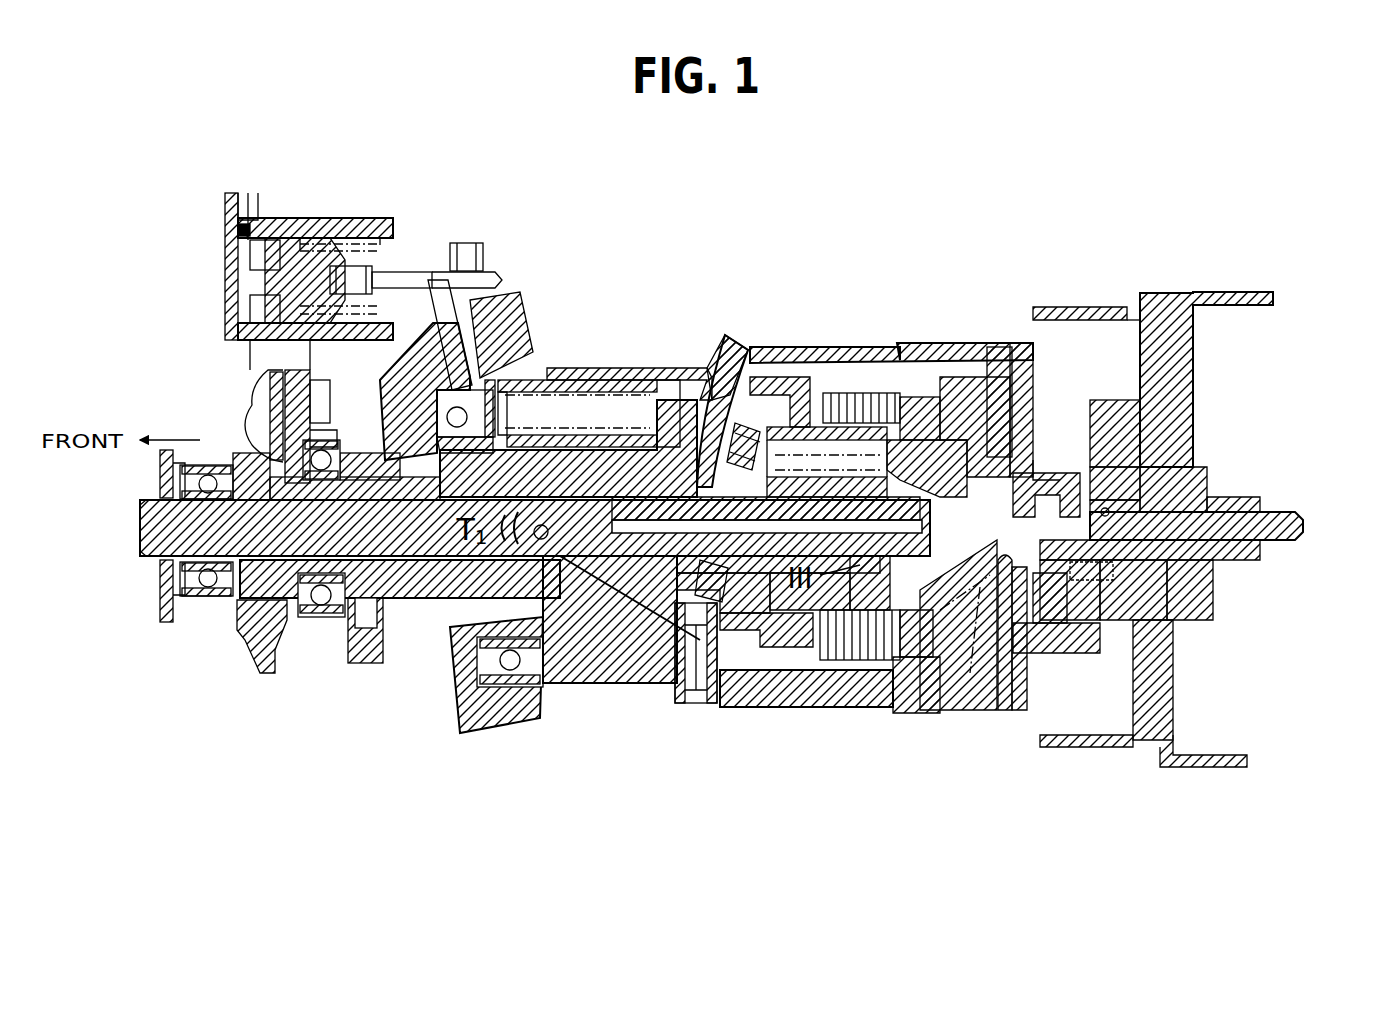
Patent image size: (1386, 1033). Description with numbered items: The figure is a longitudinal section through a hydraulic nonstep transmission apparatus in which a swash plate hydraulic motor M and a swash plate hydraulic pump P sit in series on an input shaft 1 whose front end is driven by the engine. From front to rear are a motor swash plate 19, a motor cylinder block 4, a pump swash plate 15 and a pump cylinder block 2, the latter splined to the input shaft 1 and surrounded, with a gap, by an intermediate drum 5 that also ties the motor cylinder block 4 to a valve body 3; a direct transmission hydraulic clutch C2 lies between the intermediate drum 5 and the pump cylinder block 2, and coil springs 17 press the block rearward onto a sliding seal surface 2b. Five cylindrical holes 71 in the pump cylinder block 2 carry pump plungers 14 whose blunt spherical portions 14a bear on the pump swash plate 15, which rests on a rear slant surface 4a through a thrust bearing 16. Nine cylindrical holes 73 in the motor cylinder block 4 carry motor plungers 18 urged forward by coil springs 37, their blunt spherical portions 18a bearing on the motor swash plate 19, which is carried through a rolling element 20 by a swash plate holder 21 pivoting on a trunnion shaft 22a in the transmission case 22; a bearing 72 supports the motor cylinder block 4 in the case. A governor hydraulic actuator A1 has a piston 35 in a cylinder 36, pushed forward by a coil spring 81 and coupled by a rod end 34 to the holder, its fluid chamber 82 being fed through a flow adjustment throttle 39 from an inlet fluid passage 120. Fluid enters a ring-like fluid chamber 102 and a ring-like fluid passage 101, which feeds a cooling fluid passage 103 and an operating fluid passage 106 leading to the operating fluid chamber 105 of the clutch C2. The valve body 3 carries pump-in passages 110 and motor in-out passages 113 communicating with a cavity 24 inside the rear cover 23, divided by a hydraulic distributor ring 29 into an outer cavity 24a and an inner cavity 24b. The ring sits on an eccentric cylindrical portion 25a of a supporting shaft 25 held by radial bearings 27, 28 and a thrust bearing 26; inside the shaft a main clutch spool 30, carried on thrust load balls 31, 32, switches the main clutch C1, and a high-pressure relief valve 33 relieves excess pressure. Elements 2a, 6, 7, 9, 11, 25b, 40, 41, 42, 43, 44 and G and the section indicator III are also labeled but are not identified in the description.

The input shaft 1 is at (168, 522).
The pump cylinder block 2 is at (832, 345).
The case portion 2a is at (735, 615).
The sliding seal surface 2b is at (1018, 375).
The valve body 3 is at (970, 440).
The motor cylinder block 4 is at (640, 366).
The rear slant surface 4a is at (698, 375).
The intermediate drum 5 is at (890, 395).
The piston 6 is at (800, 620).
The clutch drum 7 is at (862, 670).
The hub 9 is at (885, 700).
The clutch plate 11 is at (905, 660).
The pump plunger 14 is at (798, 400).
The blunt spherical portion 14a is at (735, 420).
The pump swash plate 15 is at (778, 430).
The thrust bearing 16 is at (770, 380).
The coil spring 17 is at (920, 440).
The motor plunger 18 is at (583, 378).
The blunt spherical portion 18a is at (560, 375).
The motor swash plate 19 is at (468, 400).
The rolling element 20 is at (432, 345).
The swash plate holder 21 is at (400, 395).
The transmission case 22 is at (262, 650).
The trunnion shaft 22a is at (548, 570).
The rear cover 23 is at (1130, 380).
The cavity 24 is at (1180, 400).
The outer cavity 24a is at (1125, 430).
The inner cavity 24b is at (1012, 710).
The hydraulic distributor ring supporting shaft 25 is at (1232, 500).
The eccentric cylindrical portion 25a is at (1150, 650).
The gear hub 25b is at (1245, 555).
The thrust bearing 26 is at (1165, 505).
The radial bearing 27 is at (1150, 480).
The radial bearing 28 is at (1210, 492).
The hydraulic distributor ring 29 is at (1045, 660).
The main clutch spool 30 is at (1290, 525).
The thrust load ball 31 is at (1210, 565).
The thrust load ball 32 is at (1200, 590).
The high-pressure relief valve 33 is at (1135, 612).
The rod end 34 is at (500, 300).
The piston 35 is at (280, 278).
The cylinder 36 is at (358, 222).
The coil spring 37 is at (660, 375).
The flow adjustment throttle 39 is at (240, 228).
The gear 40 is at (688, 690).
The gear hub 41 is at (702, 705).
The gear teeth 42 is at (698, 700).
The bearing housing 43 is at (455, 650).
The bearing retainer 44 is at (368, 655).
The cylindrical hole 71 is at (800, 425).
The bearing 72 is at (305, 625).
The cylindrical hole 73 is at (625, 355).
The coil spring 81 is at (322, 268).
The fluid chamber 82 is at (258, 316).
The ring-like fluid passage 101 is at (453, 595).
The ring-like fluid chamber 102 is at (243, 620).
The direct transmission hydraulic clutch cooling fluid passage 103 is at (622, 540).
The operating fluid chamber 105 is at (960, 660).
The direct transmission hydraulic clutch operating fluid passage 106 is at (765, 680).
The pump-in passage 110 is at (1025, 380).
The motor in-out passage 113 is at (950, 430).
The inlet fluid passage 120 is at (240, 225).
The governor hydraulic actuator A1 is at (402, 208).
The swash plate hydraulic motor M is at (598, 345).
The swash plate hydraulic pump P is at (870, 400).
The gear G is at (682, 735).
The main clutch C1 is at (1030, 425).
The direct transmission hydraulic clutch C2 is at (850, 690).
The section line III is at (1165, 705).